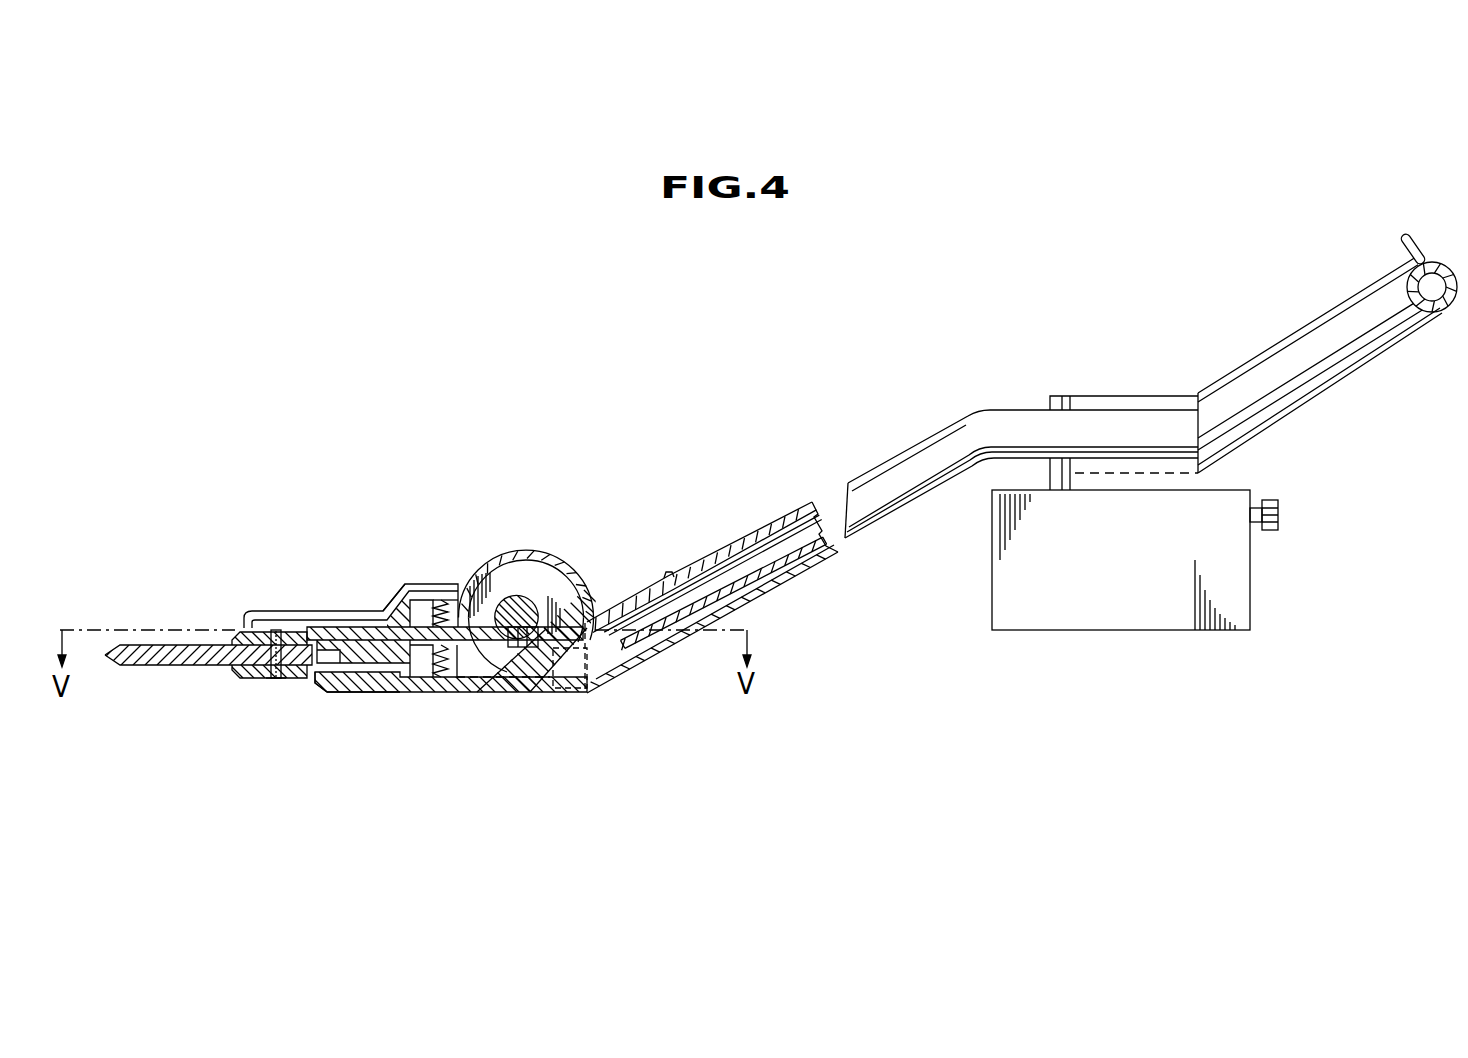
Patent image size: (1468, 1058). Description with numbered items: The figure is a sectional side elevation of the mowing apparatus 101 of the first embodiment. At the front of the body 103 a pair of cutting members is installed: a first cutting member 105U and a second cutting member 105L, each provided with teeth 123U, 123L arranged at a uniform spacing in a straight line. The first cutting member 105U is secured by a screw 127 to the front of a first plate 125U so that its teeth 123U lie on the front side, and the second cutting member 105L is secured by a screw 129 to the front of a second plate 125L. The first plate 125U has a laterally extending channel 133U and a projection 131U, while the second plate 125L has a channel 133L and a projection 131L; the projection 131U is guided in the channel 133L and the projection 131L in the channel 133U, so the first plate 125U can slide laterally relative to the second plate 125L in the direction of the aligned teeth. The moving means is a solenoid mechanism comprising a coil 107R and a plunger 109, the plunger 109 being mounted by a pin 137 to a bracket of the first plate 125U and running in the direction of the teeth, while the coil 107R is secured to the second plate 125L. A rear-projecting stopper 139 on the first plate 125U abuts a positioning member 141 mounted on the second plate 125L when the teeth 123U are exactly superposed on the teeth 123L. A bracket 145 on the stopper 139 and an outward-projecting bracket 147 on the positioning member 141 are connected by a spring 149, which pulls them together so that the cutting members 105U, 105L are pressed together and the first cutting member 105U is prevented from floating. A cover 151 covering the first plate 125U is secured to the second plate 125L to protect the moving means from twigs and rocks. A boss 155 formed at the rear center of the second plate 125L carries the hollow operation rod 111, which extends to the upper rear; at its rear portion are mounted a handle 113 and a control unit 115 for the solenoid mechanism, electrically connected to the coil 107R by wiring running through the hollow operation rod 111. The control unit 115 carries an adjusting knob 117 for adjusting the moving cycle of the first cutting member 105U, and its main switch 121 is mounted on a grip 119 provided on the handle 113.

The mowing apparatus 101 is at (778, 430).
The body 103 is at (436, 543).
The first cutting member 105U is at (243, 637).
The second cutting member 105L is at (227, 668).
The coil 107R is at (565, 556).
The plunger 109 is at (545, 630).
The hollow operation rod 111 is at (732, 548).
The handle 113 is at (1290, 376).
The control unit 115 is at (1210, 583).
The adjusting knob 117 is at (1283, 514).
The grip 119 is at (1395, 287).
The main switch 121 is at (1400, 243).
The teeth 123U is at (183, 646).
The teeth 123L is at (163, 668).
The first plate 125U is at (367, 647).
The second plate 125L is at (403, 697).
The screw 127 is at (280, 632).
The screw 129 is at (277, 675).
The projection 131L is at (325, 620).
The projection 131U is at (347, 692).
The channel 133U is at (312, 612).
The channel 133L is at (305, 690).
The pin 137 is at (557, 692).
The stopper 139 is at (444, 600).
The positioning member 141 is at (423, 665).
The bracket 145 is at (440, 588).
The bracket 147 is at (463, 693).
The spring 149 is at (530, 578).
The cover 151 is at (405, 598).
The boss 155 is at (650, 653).